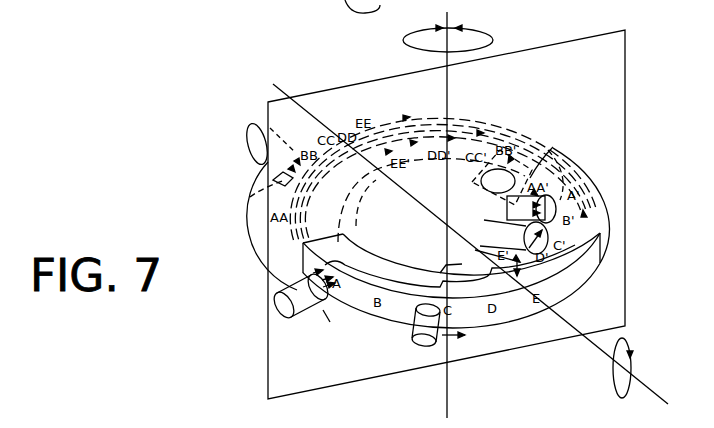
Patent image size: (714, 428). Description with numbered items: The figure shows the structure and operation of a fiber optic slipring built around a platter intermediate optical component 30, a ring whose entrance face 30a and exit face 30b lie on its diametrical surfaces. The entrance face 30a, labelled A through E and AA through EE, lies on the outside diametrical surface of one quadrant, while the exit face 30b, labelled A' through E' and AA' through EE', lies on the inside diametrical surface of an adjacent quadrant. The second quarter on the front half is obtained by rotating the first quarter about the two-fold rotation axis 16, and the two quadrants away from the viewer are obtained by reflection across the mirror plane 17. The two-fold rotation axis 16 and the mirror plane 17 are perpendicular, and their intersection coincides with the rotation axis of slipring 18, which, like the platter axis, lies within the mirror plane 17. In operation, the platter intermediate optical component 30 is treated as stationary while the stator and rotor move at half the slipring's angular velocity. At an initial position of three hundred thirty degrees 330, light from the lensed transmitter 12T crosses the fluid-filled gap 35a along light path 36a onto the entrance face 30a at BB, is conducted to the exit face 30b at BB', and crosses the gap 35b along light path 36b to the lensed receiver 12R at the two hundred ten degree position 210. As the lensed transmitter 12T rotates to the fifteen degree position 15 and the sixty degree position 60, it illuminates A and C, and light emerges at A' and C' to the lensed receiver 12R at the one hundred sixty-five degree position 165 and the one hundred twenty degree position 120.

The mirror plane 17 is at (299, 390).
The rotation axis of slipring 18 is at (503, 42).
The two-fold rotation axis 16 is at (655, 372).
The platter intermediate optical component 30 is at (330, 226).
The entrance face 30a is at (344, 326).
The exit face 30b is at (431, 200).
The gap 35a is at (250, 197).
The gap 35b is at (548, 150).
The light path 36a is at (300, 146).
The light path 36b is at (508, 163).
The lensed transmitter 12T is at (252, 146).
The lensed receiver 12R is at (502, 222).
The 330 degree position 330 is at (270, 150).
The 15 degree position 15 is at (286, 308).
The 60 degree position 60 is at (428, 340).
The 210 degree position 210 is at (468, 194).
The 165 degree position 165 is at (495, 218).
The 120 degree position 120 is at (483, 235).